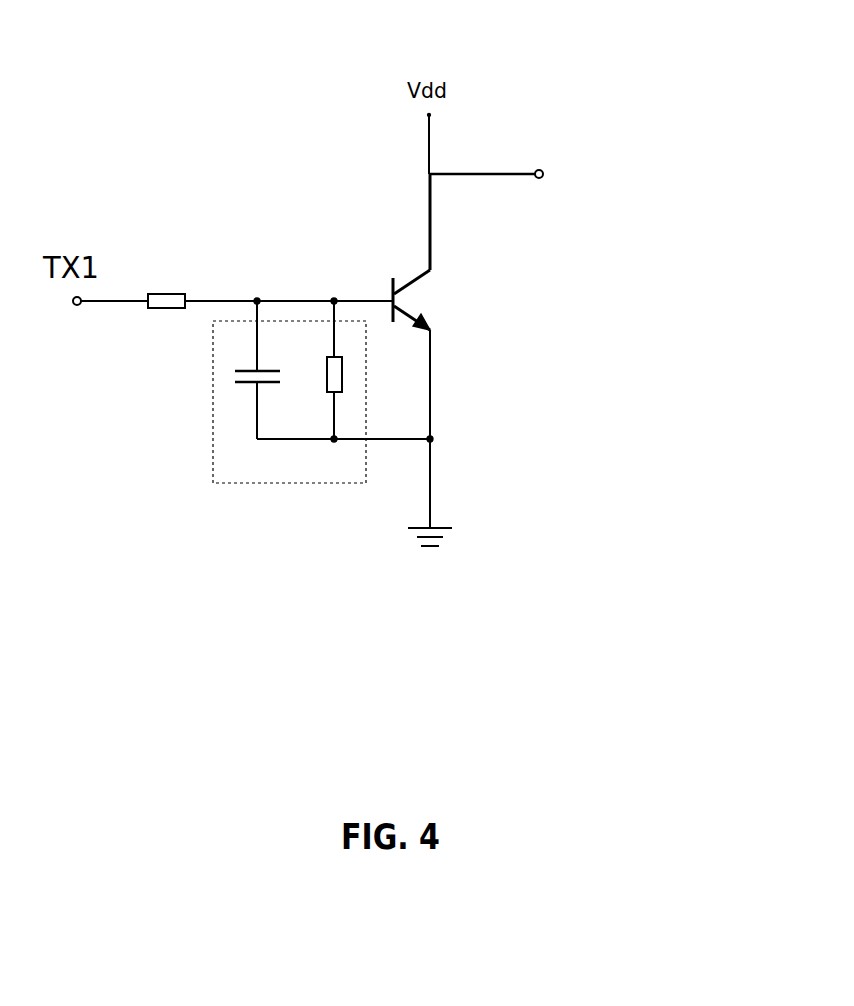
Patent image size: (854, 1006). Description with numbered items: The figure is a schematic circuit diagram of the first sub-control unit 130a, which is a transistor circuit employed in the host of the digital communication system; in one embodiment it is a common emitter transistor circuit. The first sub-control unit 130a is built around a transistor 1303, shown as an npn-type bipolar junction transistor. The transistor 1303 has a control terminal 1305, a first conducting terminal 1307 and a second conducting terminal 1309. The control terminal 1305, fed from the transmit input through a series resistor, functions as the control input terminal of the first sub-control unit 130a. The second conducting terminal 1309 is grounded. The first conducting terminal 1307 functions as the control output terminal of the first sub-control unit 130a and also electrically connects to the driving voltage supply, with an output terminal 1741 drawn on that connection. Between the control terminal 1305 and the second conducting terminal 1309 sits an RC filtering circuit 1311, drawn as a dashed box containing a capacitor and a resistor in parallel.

The first sub-control unit 130a is at (355, 99).
The output terminal 1741 is at (541, 170).
The control terminal 1305 is at (377, 301).
The first conducting terminal 1307 is at (432, 242).
The transistor 1303 is at (427, 298).
The second conducting terminal 1309 is at (432, 352).
The RC filtering circuit 1311 is at (247, 485).